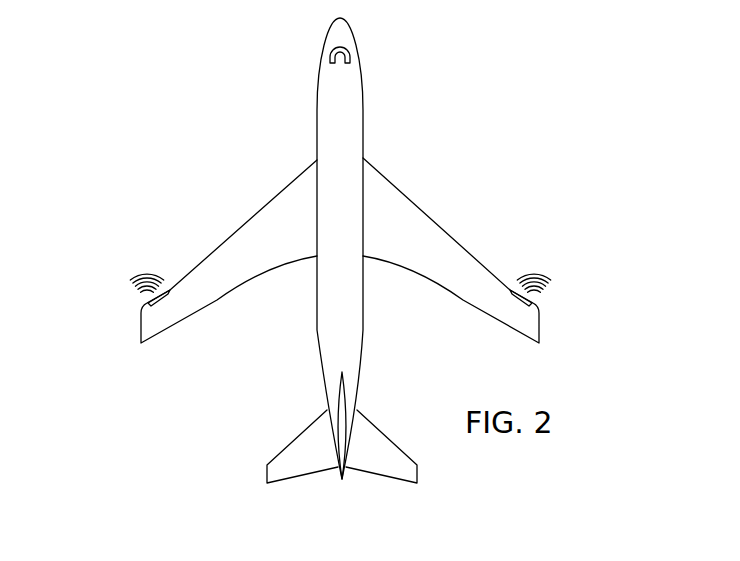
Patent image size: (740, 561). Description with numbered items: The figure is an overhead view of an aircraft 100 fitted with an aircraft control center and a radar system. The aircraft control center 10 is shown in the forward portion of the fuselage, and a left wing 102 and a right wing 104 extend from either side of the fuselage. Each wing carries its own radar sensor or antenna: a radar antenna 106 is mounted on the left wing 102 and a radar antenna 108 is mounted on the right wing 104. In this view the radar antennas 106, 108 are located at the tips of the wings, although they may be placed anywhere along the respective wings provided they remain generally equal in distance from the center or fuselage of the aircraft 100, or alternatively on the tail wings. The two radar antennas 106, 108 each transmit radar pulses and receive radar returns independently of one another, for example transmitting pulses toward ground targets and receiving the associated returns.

The aircraft 100 is at (470, 98).
The aircraft control center 10 is at (344, 50).
The left wing 102 is at (288, 215).
The right wing 104 is at (413, 213).
The radar sensor or antenna 106 is at (152, 302).
The radar sensor or antenna 108 is at (533, 298).